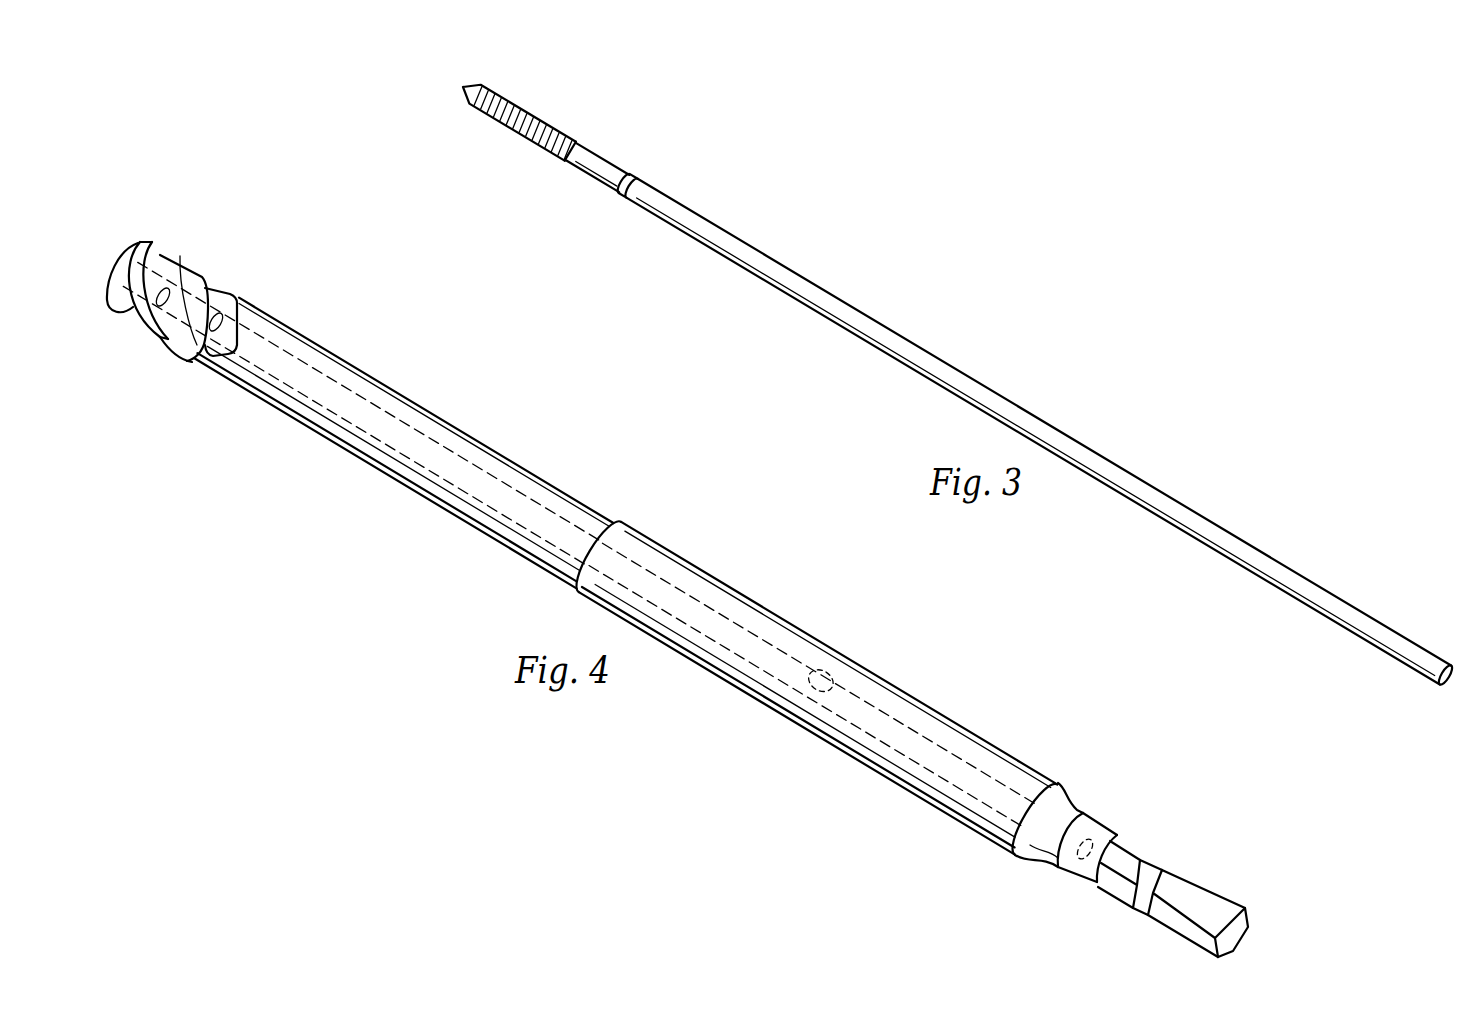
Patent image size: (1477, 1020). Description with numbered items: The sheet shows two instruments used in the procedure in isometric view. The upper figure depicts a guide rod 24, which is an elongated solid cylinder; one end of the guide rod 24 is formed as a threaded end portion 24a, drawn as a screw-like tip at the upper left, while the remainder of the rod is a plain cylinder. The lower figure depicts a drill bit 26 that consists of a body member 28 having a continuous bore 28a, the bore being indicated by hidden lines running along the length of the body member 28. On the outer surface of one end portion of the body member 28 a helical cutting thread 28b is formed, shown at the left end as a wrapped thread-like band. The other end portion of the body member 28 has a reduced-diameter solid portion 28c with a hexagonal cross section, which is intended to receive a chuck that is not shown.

In FIG. 3, the guide rod 24 is at (990, 386).
In FIG. 3, the threaded end portion 24a is at (527, 114).
In FIG. 4, the drill bit 26 is at (698, 534).
In FIG. 4, the body member 28 is at (355, 364).
In FIG. 4, the continuous bore 28a is at (836, 666).
In FIG. 4, the helical cutting thread 28b is at (203, 245).
In FIG. 4, the reduced-diameter solid portion 28c is at (1207, 888).